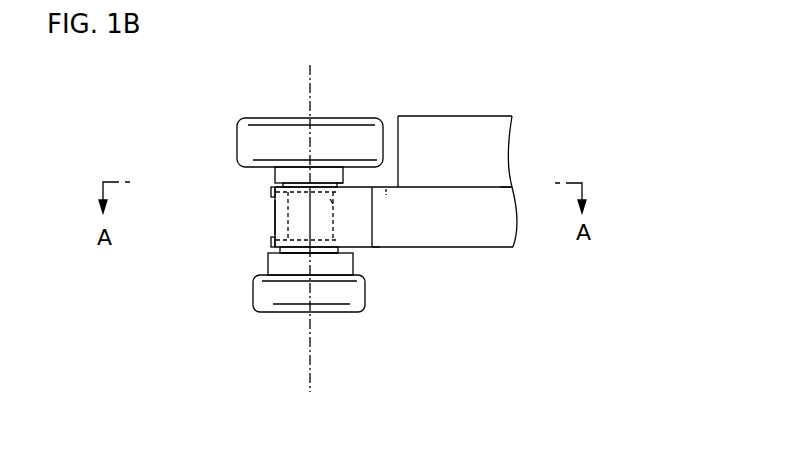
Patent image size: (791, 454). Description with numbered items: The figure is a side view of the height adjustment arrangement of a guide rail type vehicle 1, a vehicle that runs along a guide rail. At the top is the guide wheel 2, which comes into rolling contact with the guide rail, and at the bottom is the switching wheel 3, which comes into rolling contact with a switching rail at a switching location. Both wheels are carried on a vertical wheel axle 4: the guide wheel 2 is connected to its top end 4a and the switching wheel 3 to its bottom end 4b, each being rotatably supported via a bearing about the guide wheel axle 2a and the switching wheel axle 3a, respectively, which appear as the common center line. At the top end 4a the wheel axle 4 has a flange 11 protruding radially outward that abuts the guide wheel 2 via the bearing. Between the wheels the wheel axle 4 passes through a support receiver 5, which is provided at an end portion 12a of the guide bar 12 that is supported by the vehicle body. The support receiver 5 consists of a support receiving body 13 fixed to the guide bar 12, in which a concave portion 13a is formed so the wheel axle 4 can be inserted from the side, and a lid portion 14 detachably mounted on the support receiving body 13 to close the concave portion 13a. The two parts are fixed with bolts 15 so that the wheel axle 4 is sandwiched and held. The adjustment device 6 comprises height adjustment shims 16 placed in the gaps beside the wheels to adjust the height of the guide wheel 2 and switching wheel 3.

The guide rail type vehicle 1 is at (508, 89).
The guide wheel 2 is at (348, 118).
The guide wheel axle 2a is at (312, 82).
The switching wheel 3 is at (333, 313).
The switching wheel axle 3a is at (313, 382).
The wheel axle 4 is at (335, 222).
The top end 4a is at (298, 182).
The bottom end 4b is at (302, 256).
The support receiver 5 is at (368, 178).
The adjustment device 6 is at (224, 250).
The flange 11 is at (275, 189).
The guide bar 12 is at (492, 247).
The end portion 12a is at (390, 187).
The support receiving body 13 is at (367, 248).
The concave portion 13a is at (333, 204).
The lid portion 14 is at (275, 218).
The bolt 15 is at (275, 195).
The height adjustment shim 16 is at (352, 252).